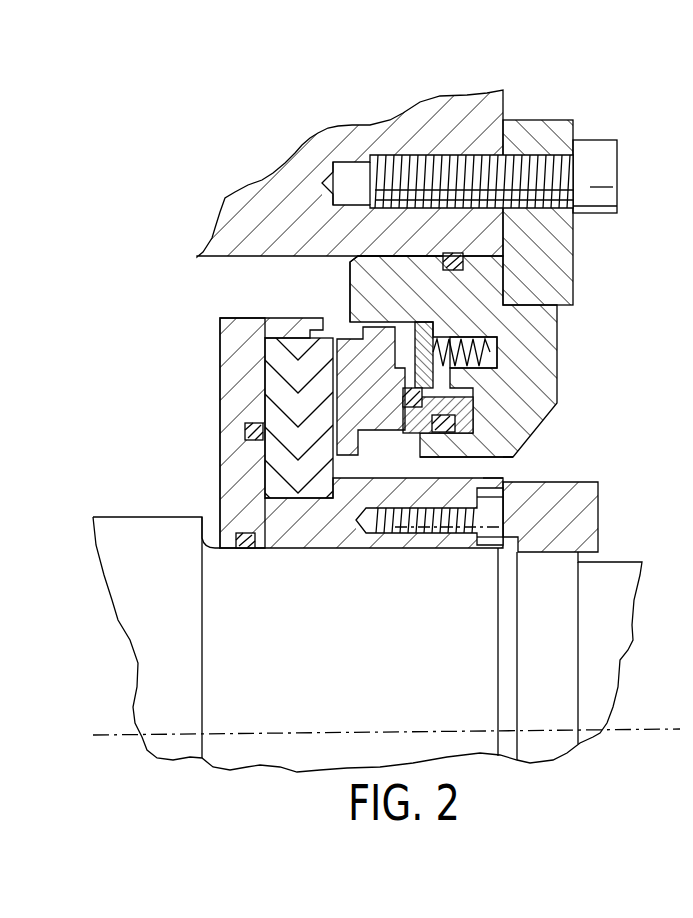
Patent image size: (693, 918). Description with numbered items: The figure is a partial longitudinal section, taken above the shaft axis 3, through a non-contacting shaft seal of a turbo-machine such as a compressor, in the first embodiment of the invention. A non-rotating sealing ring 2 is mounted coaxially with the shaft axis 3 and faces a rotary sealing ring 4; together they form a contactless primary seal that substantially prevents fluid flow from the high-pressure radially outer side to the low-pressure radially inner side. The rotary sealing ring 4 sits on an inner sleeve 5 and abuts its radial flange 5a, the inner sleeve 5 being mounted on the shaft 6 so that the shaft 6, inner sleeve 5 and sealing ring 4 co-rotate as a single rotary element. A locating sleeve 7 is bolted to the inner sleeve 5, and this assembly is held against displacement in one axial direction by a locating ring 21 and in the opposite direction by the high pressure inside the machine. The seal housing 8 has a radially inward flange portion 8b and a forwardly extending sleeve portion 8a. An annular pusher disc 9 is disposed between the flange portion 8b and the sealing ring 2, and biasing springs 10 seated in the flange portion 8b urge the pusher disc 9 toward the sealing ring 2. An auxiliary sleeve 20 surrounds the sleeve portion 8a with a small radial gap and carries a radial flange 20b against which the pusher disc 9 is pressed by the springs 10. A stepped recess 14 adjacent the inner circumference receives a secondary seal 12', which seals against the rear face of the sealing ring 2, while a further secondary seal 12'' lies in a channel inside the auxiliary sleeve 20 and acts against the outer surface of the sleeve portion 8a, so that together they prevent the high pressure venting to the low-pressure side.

The sealing ring 2 is at (343, 352).
The shaft axis 3 is at (347, 732).
The rotary sealing ring 4 is at (273, 355).
The inner sleeve 5 is at (288, 538).
The radial flange 5a is at (230, 385).
The shaft 6 is at (203, 546).
The locating sleeve 7 is at (497, 476).
The seal housing 8 is at (550, 322).
The forwardly extending sleeve portion 8a is at (443, 447).
The radially inward flange portion 8b is at (540, 383).
The annular pusher disc 9 is at (403, 320).
The biasing spring 10 is at (497, 338).
The secondary seal 12' is at (399, 397).
The further secondary seal 12'' is at (528, 461).
The stepped recess 14 is at (465, 412).
The auxiliary sleeve 20 is at (418, 413).
The radial flange 20b is at (422, 390).
The locating ring 21 is at (588, 523).